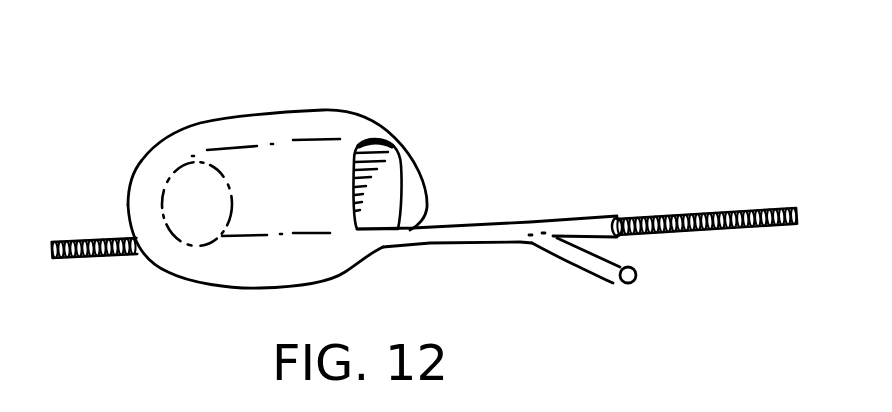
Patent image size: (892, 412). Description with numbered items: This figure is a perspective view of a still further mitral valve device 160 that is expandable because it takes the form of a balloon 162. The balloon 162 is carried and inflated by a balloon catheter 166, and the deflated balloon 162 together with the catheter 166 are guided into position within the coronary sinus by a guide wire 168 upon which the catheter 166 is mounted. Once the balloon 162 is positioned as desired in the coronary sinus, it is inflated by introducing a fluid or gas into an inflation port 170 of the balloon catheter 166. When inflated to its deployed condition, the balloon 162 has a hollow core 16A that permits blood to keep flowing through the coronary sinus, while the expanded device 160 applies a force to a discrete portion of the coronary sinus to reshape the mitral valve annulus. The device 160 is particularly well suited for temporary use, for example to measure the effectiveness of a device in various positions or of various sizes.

The device 160 is at (398, 88).
The balloon 162 is at (258, 115).
The side opening / port 16A is at (392, 178).
The balloon catheter 166 is at (448, 240).
The guide wire 168 is at (678, 213).
The inflation port 170 is at (637, 269).